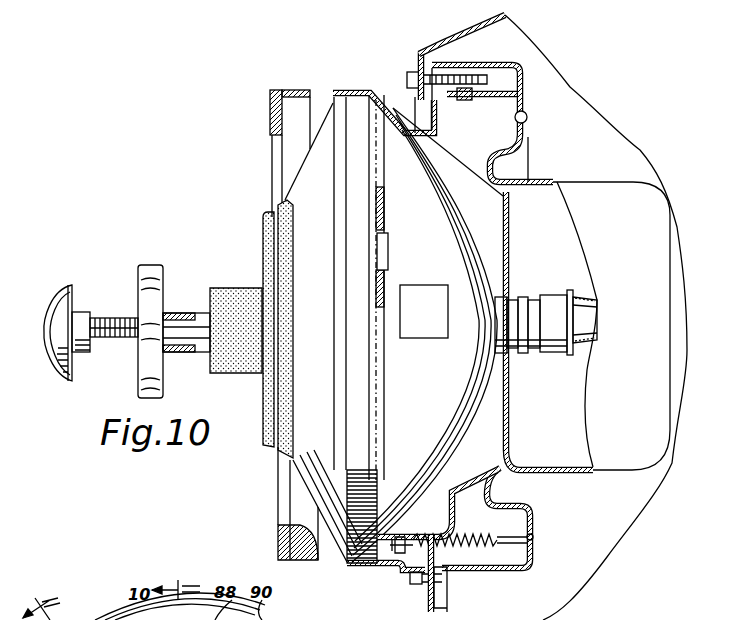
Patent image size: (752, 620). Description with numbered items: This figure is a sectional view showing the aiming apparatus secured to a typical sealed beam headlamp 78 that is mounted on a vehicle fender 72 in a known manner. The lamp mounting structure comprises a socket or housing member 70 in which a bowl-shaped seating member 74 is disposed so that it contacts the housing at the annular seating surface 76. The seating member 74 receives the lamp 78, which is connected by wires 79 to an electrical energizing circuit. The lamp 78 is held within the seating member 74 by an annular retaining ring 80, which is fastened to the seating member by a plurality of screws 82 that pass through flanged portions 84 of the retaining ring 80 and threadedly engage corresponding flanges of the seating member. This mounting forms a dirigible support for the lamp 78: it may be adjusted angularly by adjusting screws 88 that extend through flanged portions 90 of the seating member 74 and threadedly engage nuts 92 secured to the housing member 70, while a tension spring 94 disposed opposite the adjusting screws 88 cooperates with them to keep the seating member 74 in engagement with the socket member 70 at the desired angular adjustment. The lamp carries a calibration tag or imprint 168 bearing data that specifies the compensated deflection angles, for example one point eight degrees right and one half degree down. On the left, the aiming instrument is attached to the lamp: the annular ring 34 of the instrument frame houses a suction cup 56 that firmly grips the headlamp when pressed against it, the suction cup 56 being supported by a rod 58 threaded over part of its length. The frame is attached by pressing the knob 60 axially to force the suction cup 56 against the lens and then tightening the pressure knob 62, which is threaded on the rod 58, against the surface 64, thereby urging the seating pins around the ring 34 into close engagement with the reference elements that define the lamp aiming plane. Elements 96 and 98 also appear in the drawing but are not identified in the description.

The ring 34 is at (270, 125).
The suction cup 56 is at (222, 288).
The rod 58 is at (110, 318).
The knob 60 is at (60, 285).
The pressure knob 62 is at (150, 265).
The surface 64 is at (178, 313).
The socket or housing member 70 is at (606, 180).
The vehicle fender 72 is at (458, 30).
The bowl-shaped seating member 74 is at (510, 230).
The annular seating surface 76 is at (493, 165).
The sealed beam headlamp 78 is at (490, 411).
The wires 79 is at (585, 350).
The annular retaining ring 80 is at (372, 91).
The screws 82 is at (410, 578).
The flanged portions 84 is at (412, 585).
The adjusting screws 88 is at (405, 80).
The flanged portions 90 is at (420, 58).
The nuts 92 is at (462, 88).
The tension spring 94 is at (498, 540).
The lens element 96 is at (72, 619).
The lens element 98 is at (103, 619).
The tag or imprint 168 is at (420, 285).